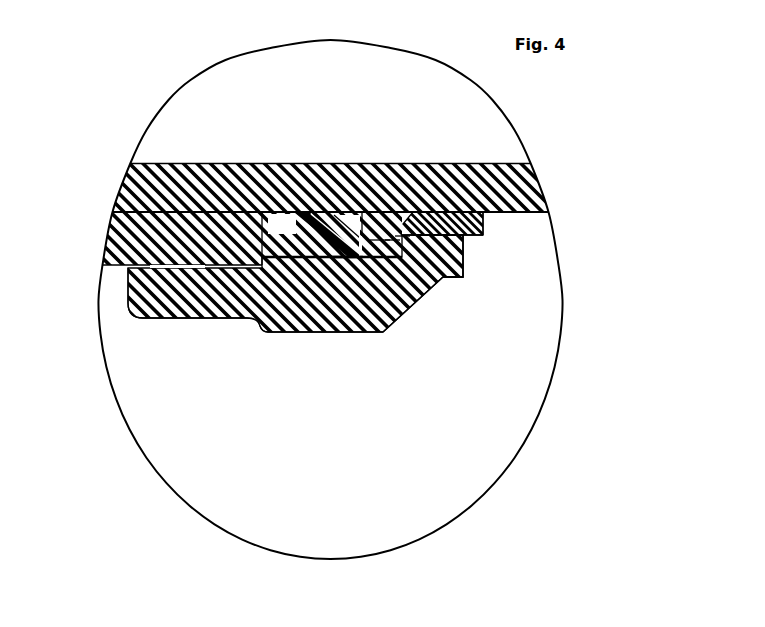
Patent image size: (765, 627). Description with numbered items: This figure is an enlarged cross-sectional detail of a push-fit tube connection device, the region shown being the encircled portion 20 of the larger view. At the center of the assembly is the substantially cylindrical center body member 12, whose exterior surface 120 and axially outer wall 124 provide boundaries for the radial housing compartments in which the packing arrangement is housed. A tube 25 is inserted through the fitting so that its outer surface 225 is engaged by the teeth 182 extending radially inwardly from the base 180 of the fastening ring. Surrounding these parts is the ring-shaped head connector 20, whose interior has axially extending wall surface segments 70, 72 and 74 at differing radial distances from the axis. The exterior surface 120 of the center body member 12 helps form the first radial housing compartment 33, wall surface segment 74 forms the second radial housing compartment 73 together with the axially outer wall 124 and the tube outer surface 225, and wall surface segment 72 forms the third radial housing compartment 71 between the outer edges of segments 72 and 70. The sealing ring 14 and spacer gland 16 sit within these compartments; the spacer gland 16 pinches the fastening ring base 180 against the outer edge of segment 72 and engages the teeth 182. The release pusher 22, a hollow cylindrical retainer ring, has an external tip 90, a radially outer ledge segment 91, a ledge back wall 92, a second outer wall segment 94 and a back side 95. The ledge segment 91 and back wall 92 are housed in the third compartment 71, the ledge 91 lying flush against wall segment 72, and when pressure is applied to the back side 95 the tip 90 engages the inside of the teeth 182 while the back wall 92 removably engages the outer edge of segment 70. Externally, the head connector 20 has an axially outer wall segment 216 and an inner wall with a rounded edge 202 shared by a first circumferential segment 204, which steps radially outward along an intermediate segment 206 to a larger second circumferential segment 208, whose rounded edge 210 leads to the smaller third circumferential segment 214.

The center body member 12 is at (118, 223).
The sealing ring 14 is at (287, 213).
The spacer gland 16 is at (341, 263).
The head connector 20 is at (296, 455).
The release pusher 22 is at (484, 229).
The tube 25 is at (190, 158).
The first radial housing compartment 33 is at (178, 280).
The wall surface segment 70 is at (433, 232).
The third radial housing compartment 71 is at (351, 227).
The wall surface segment 72 is at (374, 236).
The second radial housing compartment 73 is at (328, 218).
The wall surface segment 74 is at (307, 262).
The external tip 90 is at (381, 239).
The radially outer ledge segment 91 is at (390, 239).
The ledge back wall 92 is at (398, 233).
The second outer wall segment 94 is at (472, 235).
The back side 95 is at (484, 222).
The exterior surface 120 is at (117, 268).
The axially outer wall 124 is at (264, 213).
The base 180 is at (361, 258).
The teeth 182 is at (360, 229).
The rounded edge 202 is at (138, 320).
The first circumferential segment 204 is at (195, 323).
The intermediate segment 206 is at (272, 334).
The second circumferential segment 208 is at (332, 334).
The rounded edge 210 is at (404, 316).
The third circumferential segment 214 is at (447, 280).
The axially outer wall segment 216 is at (462, 268).
The outer surface 225 is at (525, 213).